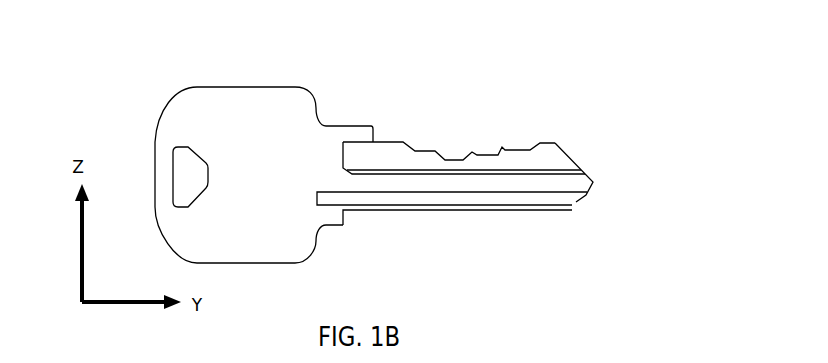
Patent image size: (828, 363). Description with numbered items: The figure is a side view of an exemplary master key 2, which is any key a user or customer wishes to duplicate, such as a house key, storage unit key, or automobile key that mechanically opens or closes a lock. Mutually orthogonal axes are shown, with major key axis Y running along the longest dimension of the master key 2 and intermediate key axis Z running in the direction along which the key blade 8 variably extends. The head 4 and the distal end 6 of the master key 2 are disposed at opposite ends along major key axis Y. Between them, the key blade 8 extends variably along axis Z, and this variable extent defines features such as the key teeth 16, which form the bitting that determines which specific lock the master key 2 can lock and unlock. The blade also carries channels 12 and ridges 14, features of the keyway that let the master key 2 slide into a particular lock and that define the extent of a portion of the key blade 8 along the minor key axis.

The master key 2 is at (518, 97).
The head 4 is at (193, 110).
The distal end 6 is at (594, 182).
The key blade 8 is at (385, 158).
The channels 12 is at (573, 200).
The ridges 14 is at (405, 185).
The key teeth 16 is at (528, 147).